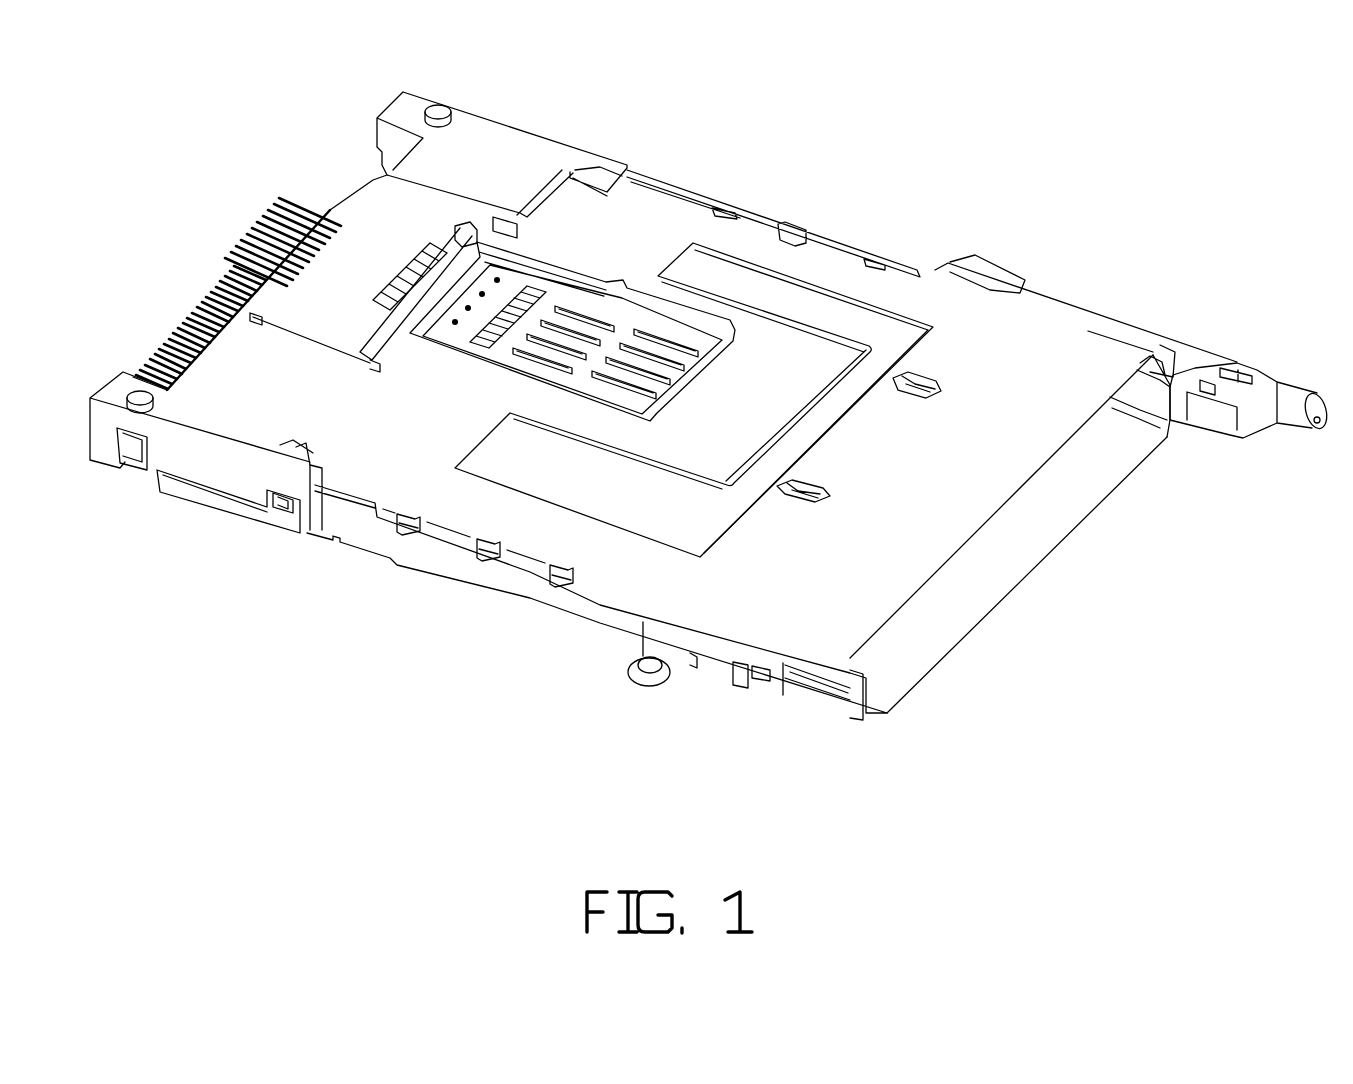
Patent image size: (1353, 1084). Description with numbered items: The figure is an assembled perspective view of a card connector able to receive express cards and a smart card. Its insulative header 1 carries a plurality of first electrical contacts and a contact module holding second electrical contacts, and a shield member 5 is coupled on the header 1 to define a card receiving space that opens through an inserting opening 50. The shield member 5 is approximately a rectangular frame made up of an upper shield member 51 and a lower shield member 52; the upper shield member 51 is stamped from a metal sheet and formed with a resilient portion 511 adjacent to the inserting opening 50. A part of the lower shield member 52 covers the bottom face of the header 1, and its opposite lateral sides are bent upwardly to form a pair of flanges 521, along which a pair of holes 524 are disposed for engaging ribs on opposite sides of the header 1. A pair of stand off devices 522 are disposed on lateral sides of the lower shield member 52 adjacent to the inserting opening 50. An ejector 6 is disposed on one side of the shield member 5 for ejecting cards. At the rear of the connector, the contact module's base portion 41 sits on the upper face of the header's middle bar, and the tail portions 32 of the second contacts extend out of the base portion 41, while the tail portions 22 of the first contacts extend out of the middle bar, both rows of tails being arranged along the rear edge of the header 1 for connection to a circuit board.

The header 1 is at (513, 150).
The base portion 41 is at (363, 250).
The tail portion 32 is at (255, 257).
The tail portion 22 is at (192, 315).
The resilient portion 511 is at (906, 376).
The shield member 5 is at (1047, 343).
The ejector 6 is at (1187, 353).
The inserting opening 50 is at (1078, 482).
The lower shield member 52 is at (1000, 612).
The upper shield member 51 is at (828, 626).
The stand off devices 522 is at (672, 668).
The flanges 521 is at (205, 498).
The holes 524 is at (292, 510).